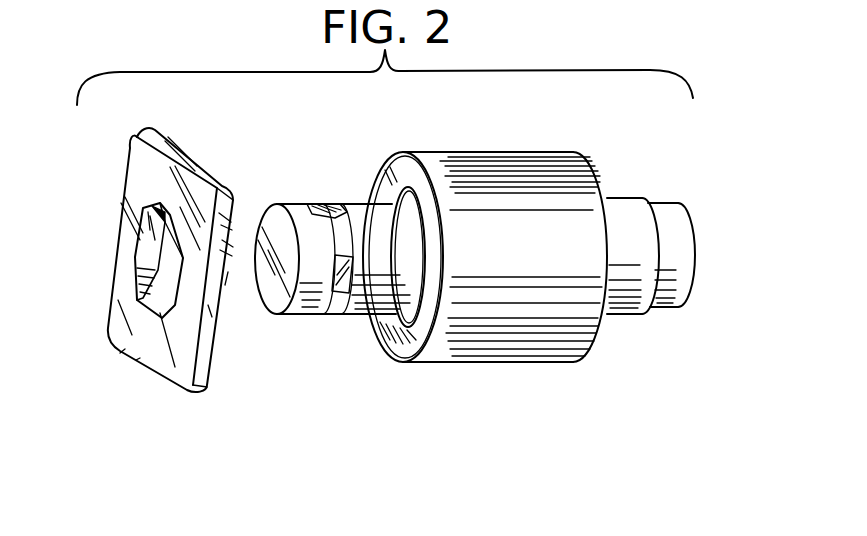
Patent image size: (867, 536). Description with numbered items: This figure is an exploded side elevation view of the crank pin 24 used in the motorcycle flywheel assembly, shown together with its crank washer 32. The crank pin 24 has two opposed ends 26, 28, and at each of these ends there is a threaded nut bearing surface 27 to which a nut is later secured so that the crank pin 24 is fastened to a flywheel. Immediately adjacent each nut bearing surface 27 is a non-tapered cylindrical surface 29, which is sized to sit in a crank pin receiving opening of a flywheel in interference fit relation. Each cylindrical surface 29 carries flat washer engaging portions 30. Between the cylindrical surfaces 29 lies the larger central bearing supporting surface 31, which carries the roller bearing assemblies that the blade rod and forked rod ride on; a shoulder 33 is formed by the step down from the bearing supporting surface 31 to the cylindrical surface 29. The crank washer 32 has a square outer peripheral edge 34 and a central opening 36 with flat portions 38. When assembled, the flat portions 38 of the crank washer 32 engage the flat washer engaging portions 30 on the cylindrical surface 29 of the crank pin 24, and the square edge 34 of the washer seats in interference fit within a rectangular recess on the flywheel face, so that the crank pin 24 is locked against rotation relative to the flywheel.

The crank pin 24 is at (423, 385).
The end 26 is at (265, 273).
The threaded nut bearing surface 27 is at (310, 293).
The end 28 is at (677, 207).
The non-tapered cylindrical surface 29 is at (373, 303).
The flat washer engaging portion 30 is at (350, 218).
The central bearing supporting surface 31 is at (503, 170).
The crank washer 32 is at (142, 185).
The shoulder 33 is at (393, 348).
The square outer peripheral edge 34 is at (187, 153).
The central opening 36 is at (163, 273).
The flat portion 38 is at (148, 242).